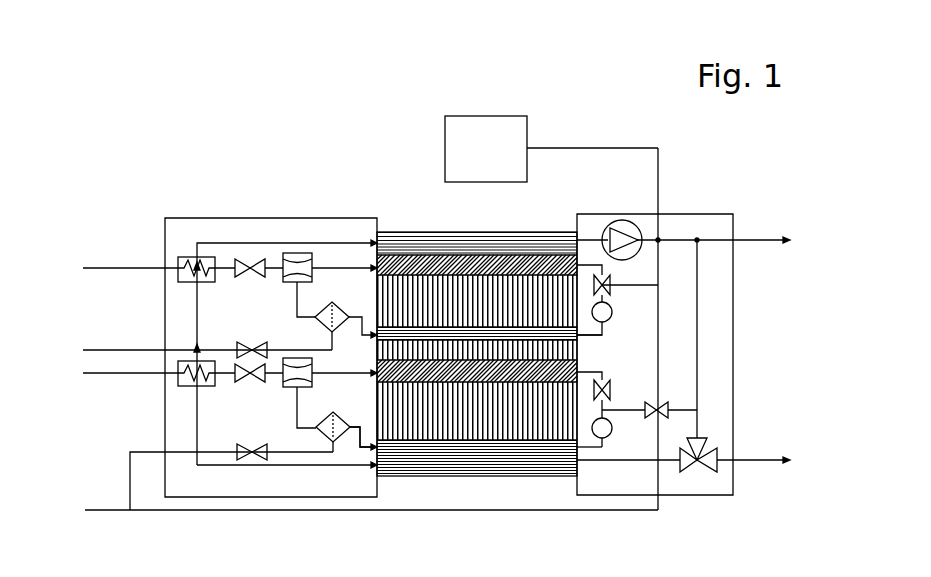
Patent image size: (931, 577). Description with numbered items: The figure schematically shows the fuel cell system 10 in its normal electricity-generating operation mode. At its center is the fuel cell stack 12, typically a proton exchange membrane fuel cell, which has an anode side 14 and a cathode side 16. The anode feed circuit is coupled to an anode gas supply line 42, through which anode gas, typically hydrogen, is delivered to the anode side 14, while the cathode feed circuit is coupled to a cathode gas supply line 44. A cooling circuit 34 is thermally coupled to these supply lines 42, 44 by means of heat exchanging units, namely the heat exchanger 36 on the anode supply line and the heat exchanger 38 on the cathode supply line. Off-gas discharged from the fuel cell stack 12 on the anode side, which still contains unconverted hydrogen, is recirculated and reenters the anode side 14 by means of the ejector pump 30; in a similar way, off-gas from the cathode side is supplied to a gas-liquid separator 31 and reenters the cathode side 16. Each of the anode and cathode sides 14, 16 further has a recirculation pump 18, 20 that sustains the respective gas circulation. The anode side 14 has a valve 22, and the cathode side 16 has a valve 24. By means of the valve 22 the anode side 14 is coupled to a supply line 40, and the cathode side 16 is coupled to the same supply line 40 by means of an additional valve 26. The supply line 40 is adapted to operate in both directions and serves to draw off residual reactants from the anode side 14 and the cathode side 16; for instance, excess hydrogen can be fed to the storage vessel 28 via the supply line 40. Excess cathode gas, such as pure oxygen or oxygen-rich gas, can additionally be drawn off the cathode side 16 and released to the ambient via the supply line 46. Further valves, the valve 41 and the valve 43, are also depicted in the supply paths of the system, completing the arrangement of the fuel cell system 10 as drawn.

The fuel cell system 10 is at (178, 134).
The fuel cell stack 12 is at (488, 477).
The anode side 14 is at (340, 268).
The cathode side 16 is at (600, 365).
The recirculation pump 18 is at (612, 313).
The recirculation pump 20 is at (612, 440).
The valve 22 is at (612, 280).
The valve 24 is at (612, 385).
The valve 26 is at (670, 412).
The storage vessel 28 is at (490, 116).
The ejector pump 30 is at (297, 253).
The gas-liquid separator 31 is at (341, 437).
The cooling circuit 34 is at (307, 465).
The heat exchanger 36 is at (183, 257).
The heat exchanger 38 is at (182, 387).
The supply line 40 is at (660, 172).
The valve 41 is at (251, 260).
The supply line 42 is at (131, 268).
The valve 43 is at (233, 384).
The supply line 44 is at (122, 376).
The supply line 46 is at (150, 512).